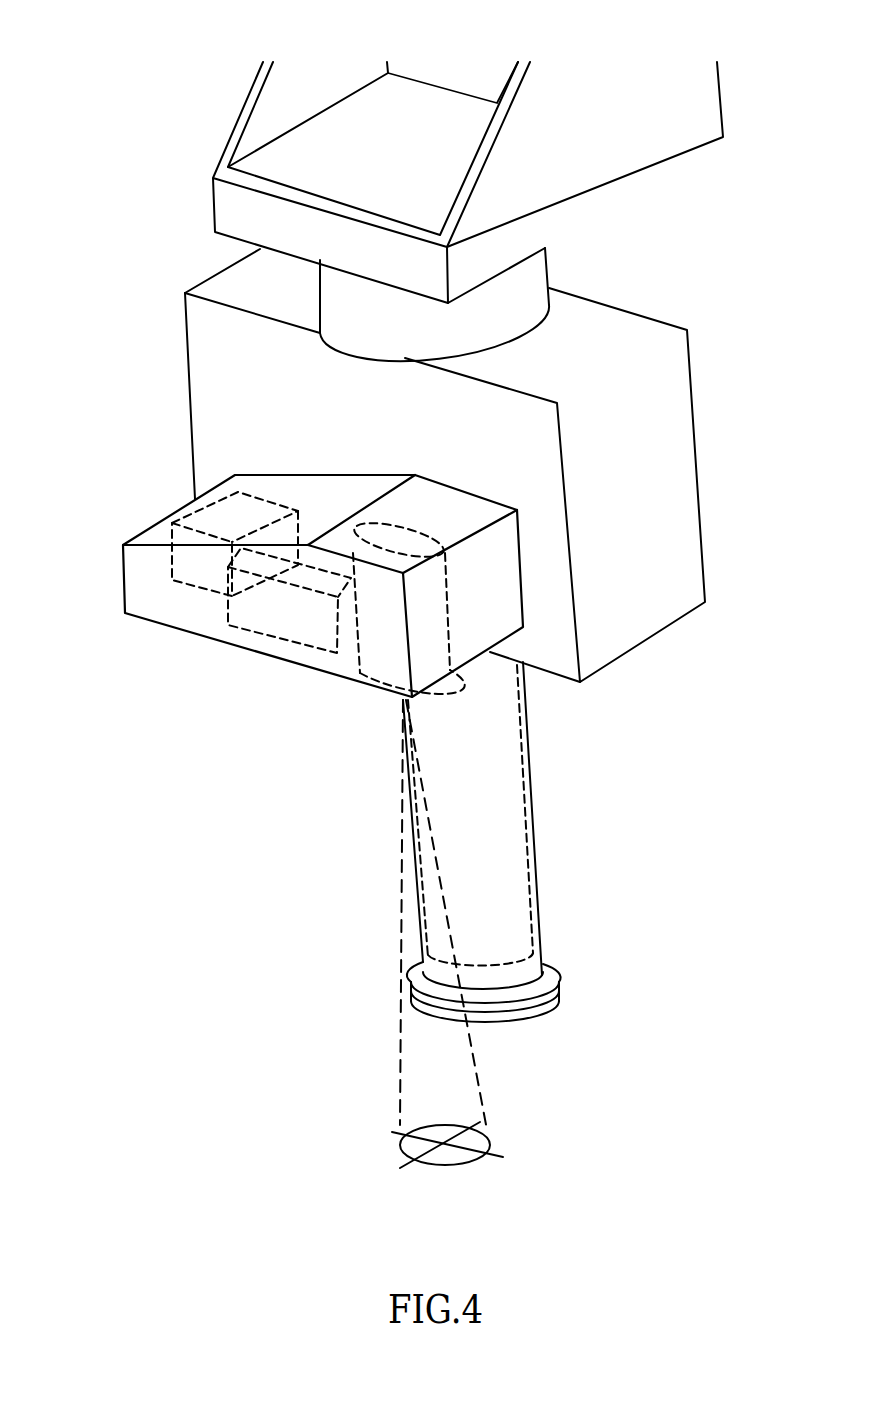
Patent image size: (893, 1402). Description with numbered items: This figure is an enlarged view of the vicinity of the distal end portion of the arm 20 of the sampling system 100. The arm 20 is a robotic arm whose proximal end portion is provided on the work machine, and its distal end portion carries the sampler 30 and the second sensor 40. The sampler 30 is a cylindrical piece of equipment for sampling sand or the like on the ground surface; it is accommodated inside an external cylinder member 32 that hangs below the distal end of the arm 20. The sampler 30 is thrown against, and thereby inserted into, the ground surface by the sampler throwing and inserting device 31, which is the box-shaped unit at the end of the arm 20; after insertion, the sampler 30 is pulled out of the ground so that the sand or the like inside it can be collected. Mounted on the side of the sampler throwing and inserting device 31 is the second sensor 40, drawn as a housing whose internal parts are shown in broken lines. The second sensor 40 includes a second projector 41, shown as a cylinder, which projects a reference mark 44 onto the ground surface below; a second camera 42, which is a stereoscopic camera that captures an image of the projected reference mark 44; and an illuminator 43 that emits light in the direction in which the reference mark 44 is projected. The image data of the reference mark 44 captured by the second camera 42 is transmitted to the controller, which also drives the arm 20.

The sampling system 100 is at (127, 152).
The arm 20 is at (647, 168).
The sampler throwing and inserting device 31 is at (682, 447).
The sampler 30 is at (510, 825).
The external cylinder member 32 is at (535, 908).
The second sensor 40 is at (162, 512).
The second projector 41 is at (327, 670).
The second camera 42 is at (273, 617).
The illuminator 43 is at (200, 585).
The reference mark 44 is at (455, 1168).